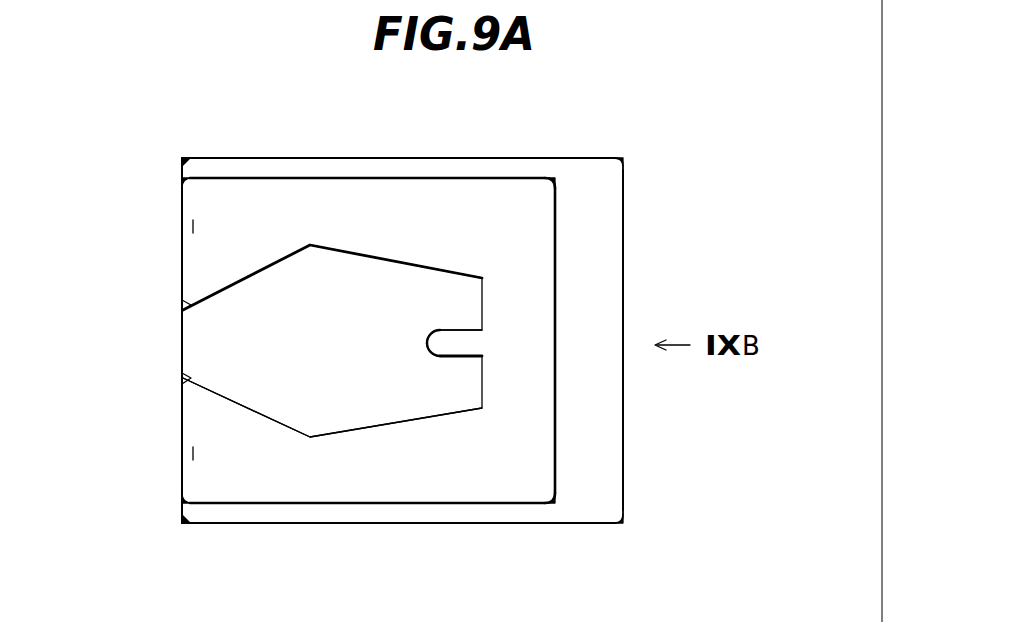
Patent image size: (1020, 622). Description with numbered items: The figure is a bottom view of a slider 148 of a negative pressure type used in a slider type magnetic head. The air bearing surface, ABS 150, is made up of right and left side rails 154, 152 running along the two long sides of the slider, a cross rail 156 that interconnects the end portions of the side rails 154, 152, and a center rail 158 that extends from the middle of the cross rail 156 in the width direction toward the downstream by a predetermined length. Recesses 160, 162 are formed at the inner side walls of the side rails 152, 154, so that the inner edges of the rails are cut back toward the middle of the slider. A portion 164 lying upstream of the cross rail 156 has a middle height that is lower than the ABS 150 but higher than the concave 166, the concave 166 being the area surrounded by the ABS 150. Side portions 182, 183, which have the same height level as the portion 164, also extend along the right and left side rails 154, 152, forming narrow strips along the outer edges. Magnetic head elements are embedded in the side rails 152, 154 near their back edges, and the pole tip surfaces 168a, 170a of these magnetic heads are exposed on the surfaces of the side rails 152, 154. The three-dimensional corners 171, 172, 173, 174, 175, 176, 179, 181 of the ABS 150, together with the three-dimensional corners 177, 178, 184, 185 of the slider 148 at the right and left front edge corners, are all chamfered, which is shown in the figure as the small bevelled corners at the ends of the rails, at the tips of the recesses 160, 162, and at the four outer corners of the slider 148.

The slider 148 is at (768, 139).
The ABS 150 is at (484, 208).
The side rail 152 is at (388, 205).
The side rail 154 is at (388, 475).
The cross rail 156 is at (543, 287).
The center rail 158 is at (462, 347).
The recess 160 is at (310, 249).
The recess 162 is at (310, 433).
The portion upstream of the cross rail 164 is at (613, 237).
The concave 166 is at (235, 348).
The pole tip surface 168a is at (193, 228).
The pole tip surface 170a is at (193, 454).
The three-dimensional corner 171 is at (552, 180).
The three-dimensional corner 172 is at (552, 507).
The three-dimensional corner 173 is at (182, 503).
The three-dimensional corner 174 is at (182, 178).
The three-dimensional corner 175 is at (428, 330).
The three-dimensional corner 176 is at (428, 357).
The three-dimensional corner 177 is at (623, 160).
The three-dimensional corner 178 is at (623, 523).
The three-dimensional corner 179 is at (182, 305).
The three-dimensional corner 181 is at (182, 380).
The side portion 182 is at (287, 168).
The side portion 183 is at (287, 513).
The three-dimensional corner 184 is at (182, 160).
The three-dimensional corner 185 is at (185, 522).